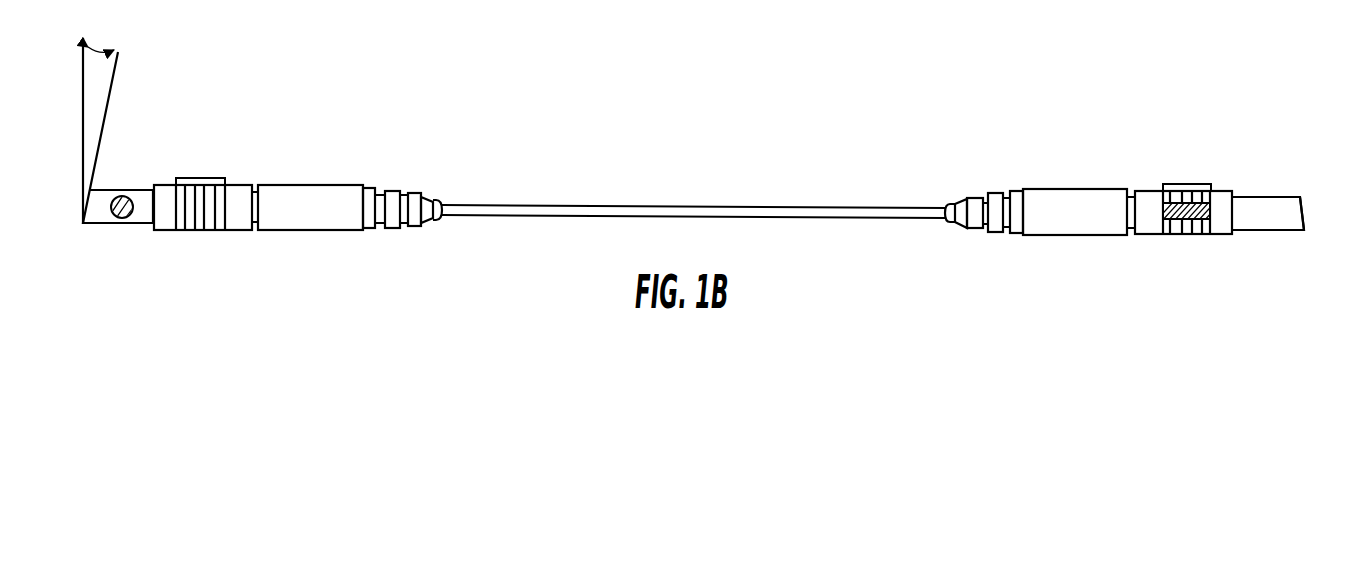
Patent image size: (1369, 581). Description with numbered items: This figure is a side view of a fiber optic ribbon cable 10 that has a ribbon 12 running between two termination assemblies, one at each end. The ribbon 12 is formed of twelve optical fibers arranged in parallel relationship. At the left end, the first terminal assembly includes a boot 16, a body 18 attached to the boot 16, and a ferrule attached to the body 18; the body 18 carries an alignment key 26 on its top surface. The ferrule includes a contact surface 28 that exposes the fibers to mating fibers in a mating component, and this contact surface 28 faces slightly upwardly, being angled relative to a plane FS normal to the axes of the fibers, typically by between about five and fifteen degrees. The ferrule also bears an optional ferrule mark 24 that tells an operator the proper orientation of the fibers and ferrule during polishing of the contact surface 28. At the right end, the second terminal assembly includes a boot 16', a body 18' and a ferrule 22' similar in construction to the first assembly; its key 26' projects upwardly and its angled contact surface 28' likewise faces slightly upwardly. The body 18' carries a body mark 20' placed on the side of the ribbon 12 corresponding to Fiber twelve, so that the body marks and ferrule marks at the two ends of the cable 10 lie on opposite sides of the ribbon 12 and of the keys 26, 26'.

The fiber optic ribbon cable 10 is at (931, 170).
The ribbon 12 is at (840, 215).
The boot 16 is at (350, 176).
The boot 16' is at (1036, 179).
The body 18 is at (214, 179).
The body 18' is at (1182, 184).
The body mark 20' is at (1184, 247).
The ferrule 22' is at (1268, 162).
The ferrule mark 24 is at (127, 217).
The alignment key 26 is at (210, 159).
The key 26' is at (1181, 151).
The contact surface 28 is at (97, 137).
The angled contact surface 28' is at (1324, 179).
The plane FS is at (83, 95).